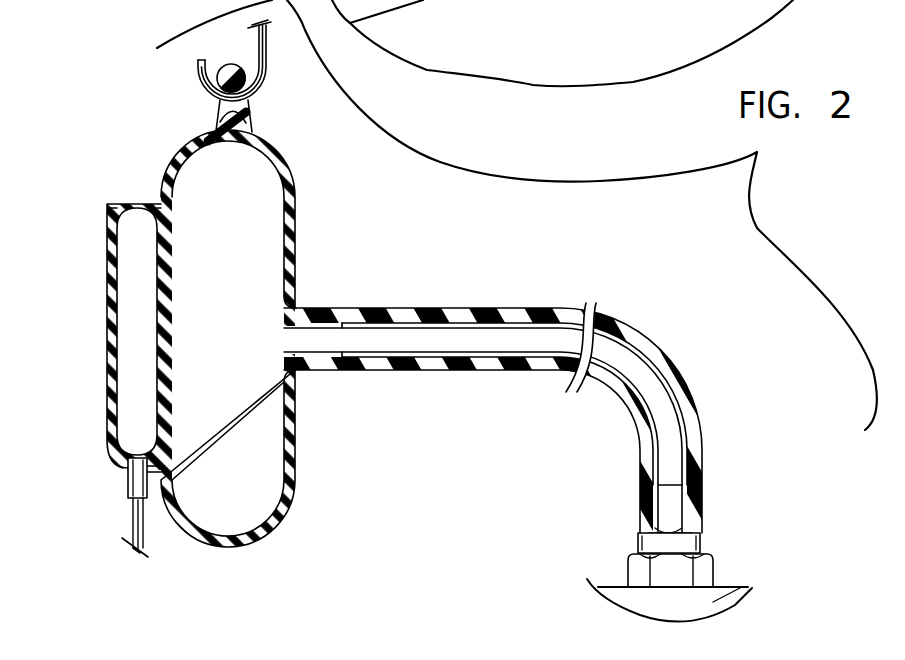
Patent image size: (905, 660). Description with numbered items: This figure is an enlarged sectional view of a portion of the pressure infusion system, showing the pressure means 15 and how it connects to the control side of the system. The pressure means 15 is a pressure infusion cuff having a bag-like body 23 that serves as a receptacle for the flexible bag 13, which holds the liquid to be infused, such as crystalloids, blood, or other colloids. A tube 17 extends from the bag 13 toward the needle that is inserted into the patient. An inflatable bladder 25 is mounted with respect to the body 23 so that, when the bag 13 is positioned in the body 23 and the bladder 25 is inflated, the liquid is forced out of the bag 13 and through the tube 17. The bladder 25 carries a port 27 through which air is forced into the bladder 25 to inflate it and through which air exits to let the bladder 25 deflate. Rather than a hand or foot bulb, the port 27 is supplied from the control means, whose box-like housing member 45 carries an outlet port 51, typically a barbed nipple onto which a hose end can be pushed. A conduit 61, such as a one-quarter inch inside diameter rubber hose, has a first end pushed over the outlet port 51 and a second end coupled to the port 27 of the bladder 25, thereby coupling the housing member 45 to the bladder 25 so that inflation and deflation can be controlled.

The flexible bag 13 is at (145, 224).
The pressure means 15 is at (270, 516).
The tube 17 is at (131, 516).
The bag-like body 23 is at (108, 329).
The inflatable bladder 25 is at (296, 424).
The port 27 is at (343, 308).
The housing member 45 is at (740, 588).
The outlet port 51 is at (697, 500).
The conduit 61 is at (558, 366).